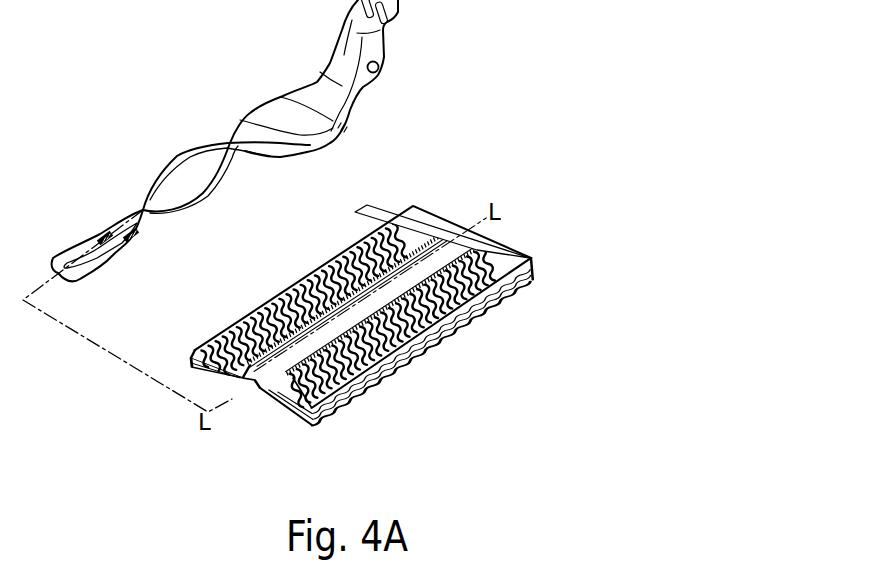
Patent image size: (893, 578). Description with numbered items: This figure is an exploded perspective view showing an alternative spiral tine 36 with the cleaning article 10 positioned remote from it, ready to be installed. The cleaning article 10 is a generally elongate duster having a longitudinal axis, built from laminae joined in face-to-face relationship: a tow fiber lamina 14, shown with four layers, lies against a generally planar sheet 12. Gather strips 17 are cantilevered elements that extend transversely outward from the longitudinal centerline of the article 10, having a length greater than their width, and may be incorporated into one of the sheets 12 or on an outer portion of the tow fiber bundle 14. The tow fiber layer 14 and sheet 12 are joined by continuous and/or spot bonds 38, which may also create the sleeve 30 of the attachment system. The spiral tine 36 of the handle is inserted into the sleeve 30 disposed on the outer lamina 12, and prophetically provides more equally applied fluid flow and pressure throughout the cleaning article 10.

The cleaning article 10 is at (366, 321).
The generally planar sheet 12 is at (328, 268).
The tow fiber lamina 14 is at (332, 417).
The gather strips 17 is at (358, 208).
The sleeve 30 is at (447, 240).
The spiral tine 36 is at (172, 175).
The bonds 38 is at (294, 379).